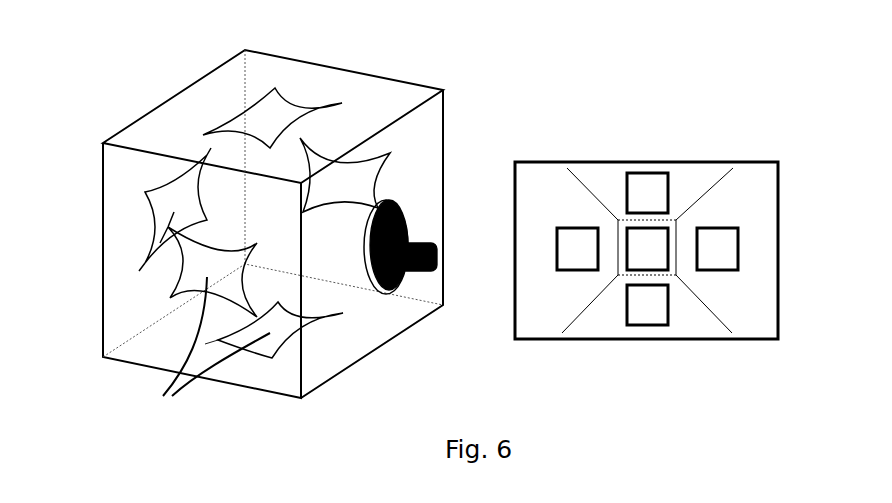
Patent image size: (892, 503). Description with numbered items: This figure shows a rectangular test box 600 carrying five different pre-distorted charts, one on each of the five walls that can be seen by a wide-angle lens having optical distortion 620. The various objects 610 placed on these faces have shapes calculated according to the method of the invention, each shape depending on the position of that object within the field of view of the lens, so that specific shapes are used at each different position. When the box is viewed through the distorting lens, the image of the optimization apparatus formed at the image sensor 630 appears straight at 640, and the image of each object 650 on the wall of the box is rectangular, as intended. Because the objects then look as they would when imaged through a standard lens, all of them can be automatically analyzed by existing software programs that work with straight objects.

The rectangular test box 600 is at (273, 224).
The objects 610 is at (211, 350).
The wide-angle lens having optical distortion 620 is at (403, 247).
The image sensor 630 is at (646, 239).
The straight image of the optimization apparatus 640 is at (644, 250).
The image of each object 650 is at (647, 305).